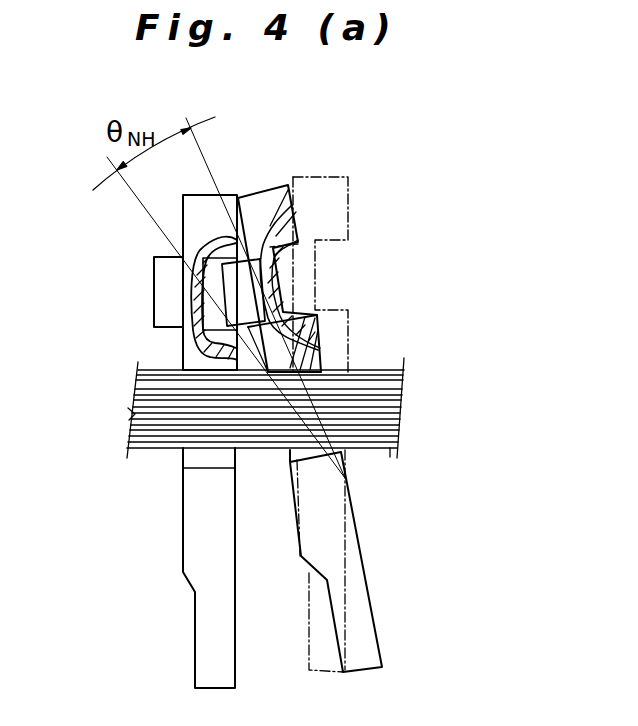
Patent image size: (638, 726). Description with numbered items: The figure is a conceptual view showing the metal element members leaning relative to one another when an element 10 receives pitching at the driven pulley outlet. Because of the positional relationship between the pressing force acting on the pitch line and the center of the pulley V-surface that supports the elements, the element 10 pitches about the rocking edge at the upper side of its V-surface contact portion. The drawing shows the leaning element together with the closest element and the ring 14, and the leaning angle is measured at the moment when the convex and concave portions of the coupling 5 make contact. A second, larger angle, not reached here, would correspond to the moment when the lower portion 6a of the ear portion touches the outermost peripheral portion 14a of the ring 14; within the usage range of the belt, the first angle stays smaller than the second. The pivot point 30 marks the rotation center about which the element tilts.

The coupling 5 is at (234, 282).
The lower portion of the ear portion 6a is at (271, 278).
The element 10 is at (287, 150).
The ring 14 is at (305, 382).
The outermost peripheral portion of the ring 14a is at (307, 339).
The pivot point 30 is at (352, 478).